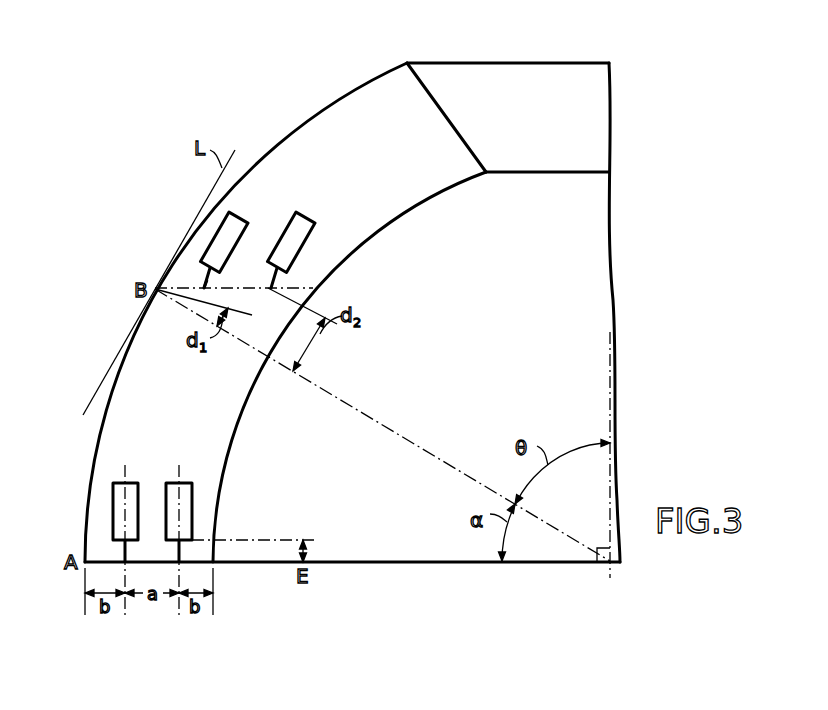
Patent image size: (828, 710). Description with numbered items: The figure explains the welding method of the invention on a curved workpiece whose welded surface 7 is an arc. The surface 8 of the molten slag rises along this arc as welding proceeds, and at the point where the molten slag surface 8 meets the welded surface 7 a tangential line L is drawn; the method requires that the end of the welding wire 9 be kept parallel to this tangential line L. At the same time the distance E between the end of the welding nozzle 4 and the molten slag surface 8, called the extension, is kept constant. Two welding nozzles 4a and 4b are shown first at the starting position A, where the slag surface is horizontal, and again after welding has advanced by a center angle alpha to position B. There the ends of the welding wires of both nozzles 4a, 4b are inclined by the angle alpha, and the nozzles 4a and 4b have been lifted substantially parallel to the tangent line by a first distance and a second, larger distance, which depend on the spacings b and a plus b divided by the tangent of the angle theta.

The welding nozzle 4 is at (292, 225).
The welding nozzle 4a is at (132, 482).
The welding nozzle 4b is at (186, 482).
The welded surface 7 is at (100, 430).
The molten slag surface 8 is at (191, 288).
The welding wire 9 is at (198, 275).